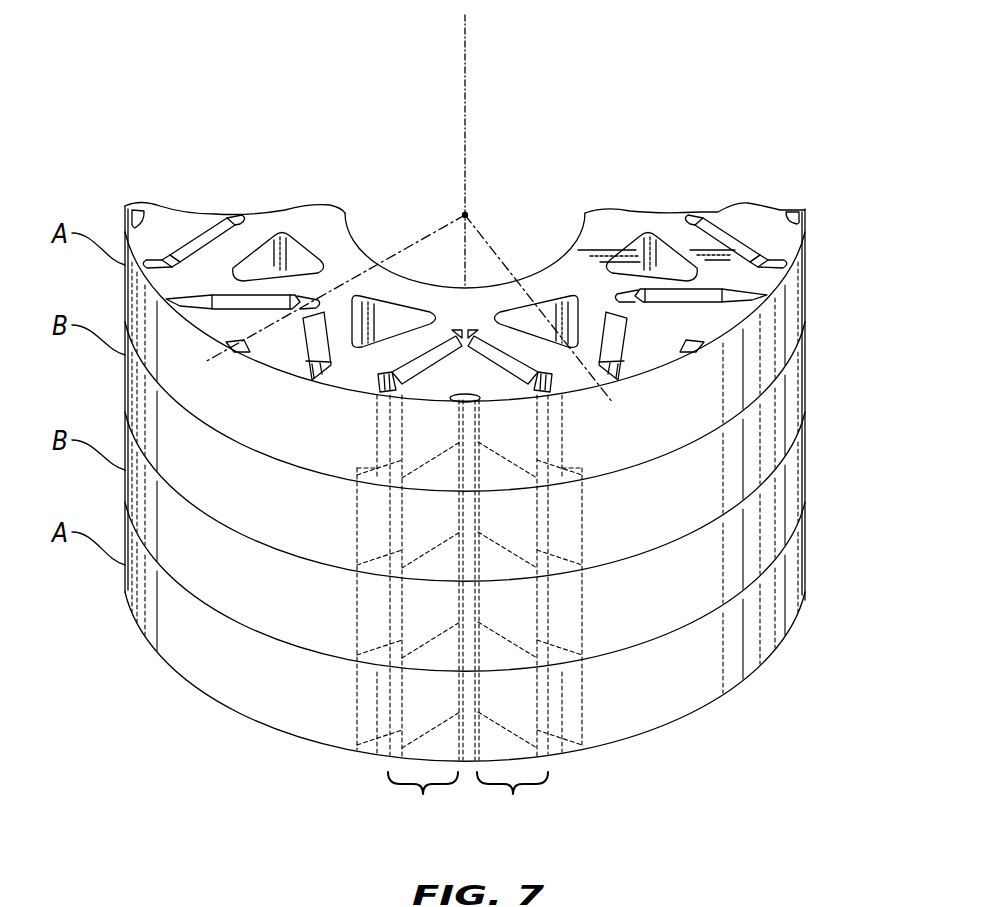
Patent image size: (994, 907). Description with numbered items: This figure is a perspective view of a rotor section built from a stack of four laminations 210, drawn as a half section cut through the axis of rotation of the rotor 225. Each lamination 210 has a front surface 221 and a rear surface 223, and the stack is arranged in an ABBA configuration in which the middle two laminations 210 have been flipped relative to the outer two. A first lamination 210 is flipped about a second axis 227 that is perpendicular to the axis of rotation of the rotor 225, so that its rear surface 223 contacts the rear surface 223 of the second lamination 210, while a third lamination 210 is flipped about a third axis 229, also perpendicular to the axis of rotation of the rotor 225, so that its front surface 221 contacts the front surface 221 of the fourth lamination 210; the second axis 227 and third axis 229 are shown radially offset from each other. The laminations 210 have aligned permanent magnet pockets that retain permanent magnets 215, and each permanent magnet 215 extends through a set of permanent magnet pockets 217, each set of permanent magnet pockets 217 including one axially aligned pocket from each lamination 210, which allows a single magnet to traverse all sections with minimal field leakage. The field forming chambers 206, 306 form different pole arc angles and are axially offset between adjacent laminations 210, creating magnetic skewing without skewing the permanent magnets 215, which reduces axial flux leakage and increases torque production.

The lamination 210 is at (479, 452).
The front surface 221 is at (176, 226).
The rear surface 223 is at (435, 542).
The permanent magnet 215 is at (427, 360).
The axis of rotation of the rotor 225 is at (467, 108).
The second axis 227 is at (346, 212).
The third axis 229 is at (565, 325).
The field forming chamber 206 is at (368, 440).
The field forming chamber 306 is at (355, 530).
The set of permanent magnet pockets 217 is at (423, 794).